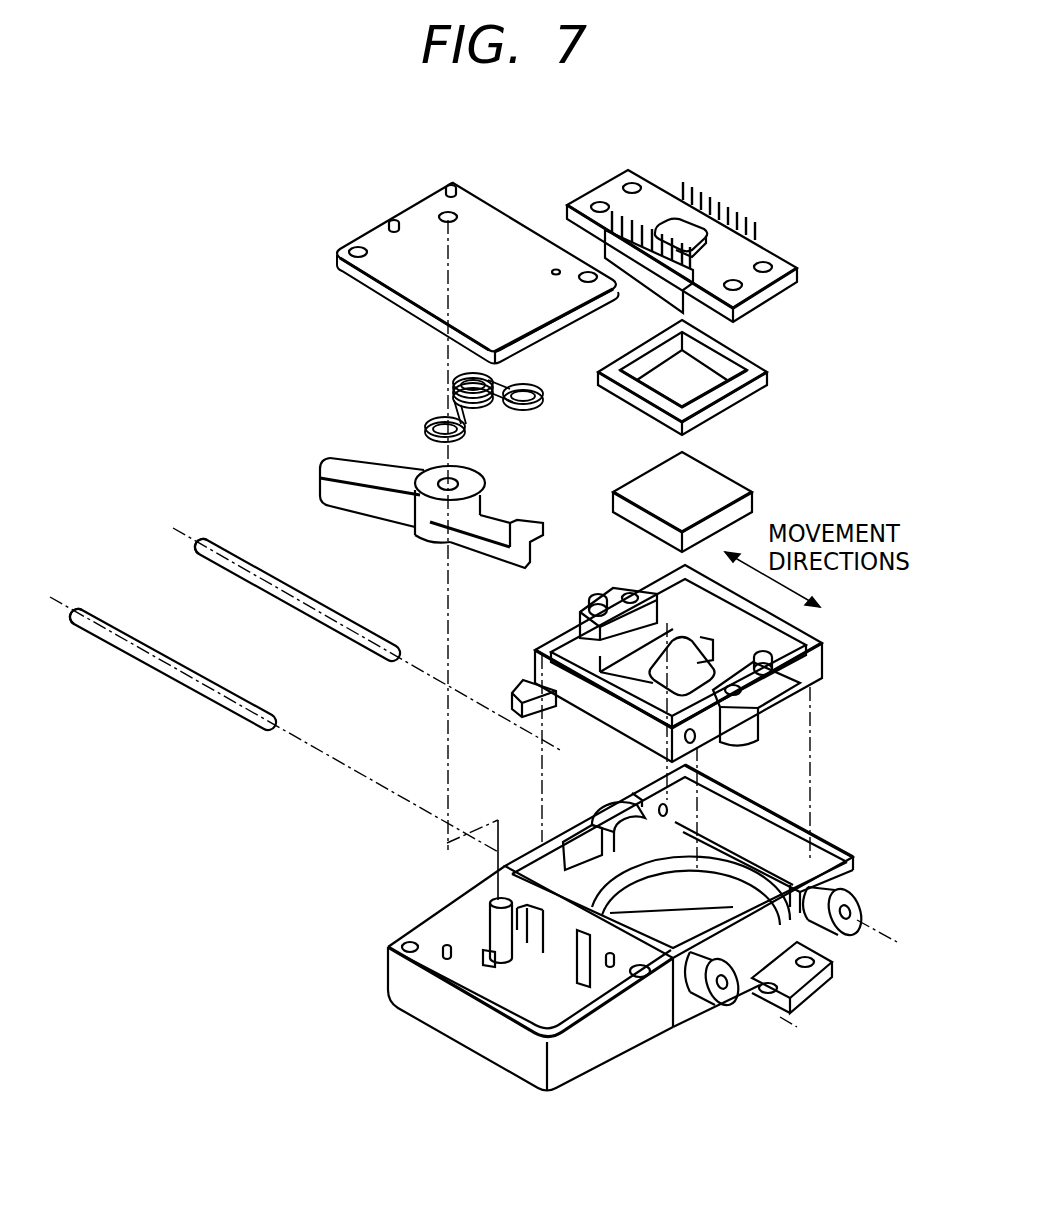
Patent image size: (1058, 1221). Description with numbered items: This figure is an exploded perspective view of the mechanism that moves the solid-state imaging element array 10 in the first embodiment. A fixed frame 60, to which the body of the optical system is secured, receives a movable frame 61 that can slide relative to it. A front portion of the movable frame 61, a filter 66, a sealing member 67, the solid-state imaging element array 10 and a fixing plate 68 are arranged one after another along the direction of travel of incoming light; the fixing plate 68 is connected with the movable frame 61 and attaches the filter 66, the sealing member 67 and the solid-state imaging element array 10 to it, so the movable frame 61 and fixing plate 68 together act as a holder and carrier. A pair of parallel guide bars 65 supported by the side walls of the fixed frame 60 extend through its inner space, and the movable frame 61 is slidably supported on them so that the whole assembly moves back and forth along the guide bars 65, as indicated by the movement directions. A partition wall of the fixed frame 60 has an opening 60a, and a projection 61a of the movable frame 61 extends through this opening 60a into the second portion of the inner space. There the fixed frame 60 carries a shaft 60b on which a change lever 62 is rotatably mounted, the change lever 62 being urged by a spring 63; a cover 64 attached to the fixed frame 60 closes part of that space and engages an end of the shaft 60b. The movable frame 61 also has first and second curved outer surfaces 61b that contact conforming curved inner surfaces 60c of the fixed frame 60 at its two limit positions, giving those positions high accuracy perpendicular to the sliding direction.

The solid-state imaging element array 10 is at (757, 222).
The fixed frame 60 is at (654, 927).
The opening 60a is at (533, 937).
The shaft 60b is at (497, 923).
The curved inner surfaces 60c is at (613, 810).
The movable frame 61 is at (682, 667).
The projection 61a is at (520, 687).
The curved outer surfaces 61b is at (612, 597).
The change lever 62 is at (328, 492).
The spring 63 is at (417, 430).
The cover 64 is at (473, 208).
The guide bars 65 is at (235, 570).
The filter 66 is at (733, 487).
The sealing member 67 is at (757, 383).
The fixing plate 68 is at (790, 265).